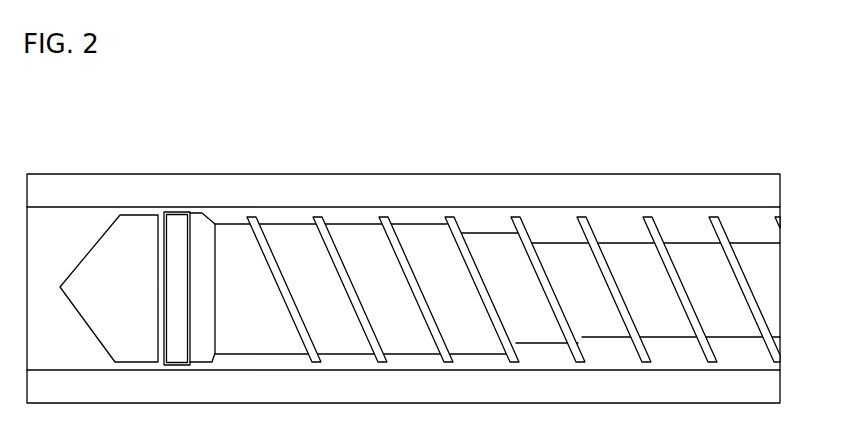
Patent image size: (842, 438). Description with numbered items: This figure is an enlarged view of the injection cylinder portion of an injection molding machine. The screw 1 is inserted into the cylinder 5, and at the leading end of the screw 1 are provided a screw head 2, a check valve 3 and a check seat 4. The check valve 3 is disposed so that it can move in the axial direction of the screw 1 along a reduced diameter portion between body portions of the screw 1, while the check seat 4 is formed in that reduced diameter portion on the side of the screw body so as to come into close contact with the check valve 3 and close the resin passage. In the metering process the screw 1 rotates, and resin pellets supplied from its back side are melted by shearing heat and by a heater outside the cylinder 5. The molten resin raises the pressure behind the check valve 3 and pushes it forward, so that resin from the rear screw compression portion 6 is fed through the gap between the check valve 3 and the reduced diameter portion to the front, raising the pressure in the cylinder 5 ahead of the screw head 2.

The screw 1 is at (691, 257).
The screw head 2 is at (125, 239).
The check valve 3 is at (181, 225).
The check seat 4 is at (200, 233).
The cylinder 5 is at (345, 193).
The rear screw compression portion 6 is at (492, 222).